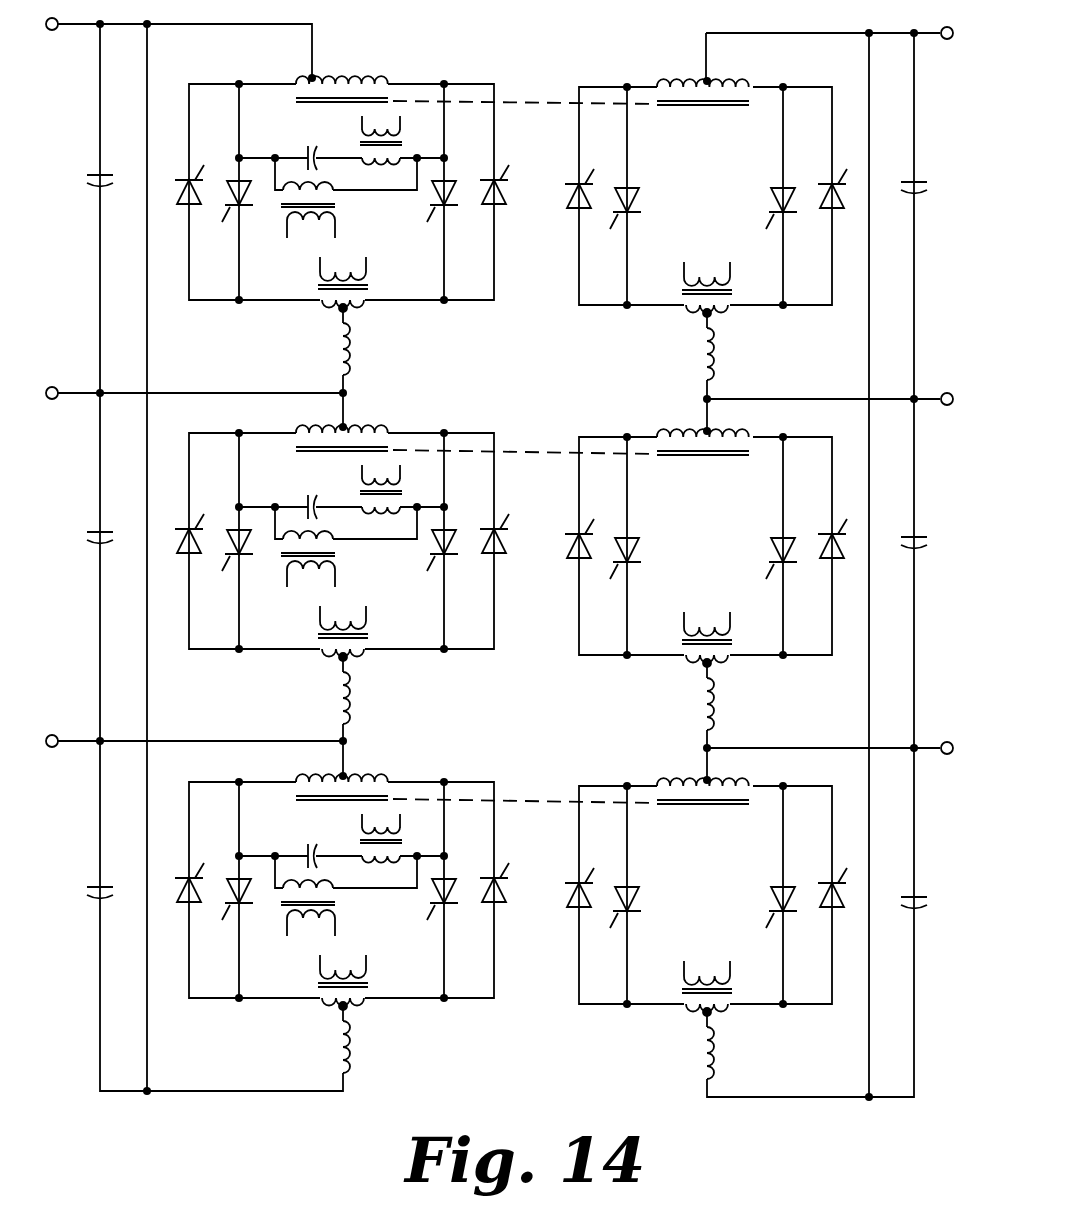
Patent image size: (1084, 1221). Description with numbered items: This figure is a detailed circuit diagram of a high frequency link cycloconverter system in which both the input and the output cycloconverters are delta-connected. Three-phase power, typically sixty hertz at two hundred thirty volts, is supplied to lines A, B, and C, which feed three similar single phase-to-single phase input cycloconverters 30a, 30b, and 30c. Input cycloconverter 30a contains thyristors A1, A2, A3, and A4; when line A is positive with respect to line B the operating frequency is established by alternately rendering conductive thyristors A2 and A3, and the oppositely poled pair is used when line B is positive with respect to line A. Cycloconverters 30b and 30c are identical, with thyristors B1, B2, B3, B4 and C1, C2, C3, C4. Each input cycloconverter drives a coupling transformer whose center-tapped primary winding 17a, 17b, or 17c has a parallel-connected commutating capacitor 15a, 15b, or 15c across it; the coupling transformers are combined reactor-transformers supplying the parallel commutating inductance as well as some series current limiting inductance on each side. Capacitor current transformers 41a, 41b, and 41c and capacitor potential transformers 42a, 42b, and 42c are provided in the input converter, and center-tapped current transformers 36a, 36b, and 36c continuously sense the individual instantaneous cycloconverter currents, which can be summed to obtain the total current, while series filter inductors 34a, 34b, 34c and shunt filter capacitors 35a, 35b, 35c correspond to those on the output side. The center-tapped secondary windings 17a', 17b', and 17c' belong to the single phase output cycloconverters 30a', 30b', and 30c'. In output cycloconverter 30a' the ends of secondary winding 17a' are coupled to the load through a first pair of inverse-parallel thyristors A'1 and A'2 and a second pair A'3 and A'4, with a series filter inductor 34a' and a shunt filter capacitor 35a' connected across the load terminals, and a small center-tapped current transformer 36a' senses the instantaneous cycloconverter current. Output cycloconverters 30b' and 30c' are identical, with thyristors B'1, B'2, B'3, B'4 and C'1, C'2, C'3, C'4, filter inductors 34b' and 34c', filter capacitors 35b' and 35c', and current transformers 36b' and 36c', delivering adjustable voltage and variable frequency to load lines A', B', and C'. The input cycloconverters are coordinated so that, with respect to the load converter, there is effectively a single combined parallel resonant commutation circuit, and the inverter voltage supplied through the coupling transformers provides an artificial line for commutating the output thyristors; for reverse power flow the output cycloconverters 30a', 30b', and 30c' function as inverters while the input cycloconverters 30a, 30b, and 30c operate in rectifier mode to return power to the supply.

The input line A is at (179, 40).
The input line B is at (194, 385).
The input line C is at (194, 733).
The load line A' is at (829, 22).
The load line B' is at (830, 389).
The load line C' is at (830, 739).
The input cycloconverter 30a is at (341, 172).
The input cycloconverter 30b is at (341, 527).
The input cycloconverter 30c is at (341, 876).
The output cycloconverter 30a' is at (705, 174).
The output cycloconverter 30b' is at (705, 530).
The output cycloconverter 30c' is at (705, 878).
The coupling transformer primary winding 17a is at (342, 71).
The coupling transformer primary winding 17b is at (345, 422).
The coupling transformer primary winding 17c is at (344, 770).
The coupling transformer secondary winding 17a' is at (716, 69).
The coupling transformer secondary winding 17b' is at (712, 427).
The coupling transformer secondary winding 17c' is at (711, 776).
The commutating capacitor 15a is at (304, 152).
The commutating capacitor 15b is at (304, 501).
The commutating capacitor 15c is at (304, 850).
The capacitor current transformer 41a is at (359, 150).
The capacitor current transformer 41b is at (359, 499).
The capacitor current transformer 41c is at (359, 848).
The capacitor potential transformer 42a is at (339, 208).
The capacitor potential transformer 42b is at (339, 557).
The capacitor potential transformer 42c is at (339, 906).
The current transformer 36a is at (362, 284).
The current transformer 36b is at (362, 633).
The current transformer 36c is at (362, 982).
The current transformer 36a' is at (728, 289).
The current transformer 36b' is at (728, 639).
The current transformer 36c' is at (728, 988).
The series filter inductor 34a is at (367, 350).
The series filter inductor 34b is at (367, 699).
The series filter inductor 34c is at (367, 1039).
The series filter inductor 34a' is at (733, 356).
The series filter inductor 34b' is at (733, 705).
The series filter inductor 34c' is at (732, 1045).
The shunt filter capacitor 35a is at (85, 171).
The shunt filter capacitor 35b is at (85, 527).
The shunt filter capacitor 35c is at (85, 883).
The shunt filter capacitor 35a' is at (928, 174).
The shunt filter capacitor 35b' is at (928, 533).
The shunt filter capacitor 35c' is at (927, 893).
The thyristor A1 is at (184, 180).
The thyristor A2 is at (244, 205).
The thyristor A3 is at (449, 206).
The thyristor A4 is at (504, 186).
The thyristor B1 is at (184, 529).
The thyristor B2 is at (244, 554).
The thyristor B3 is at (449, 555).
The thyristor B4 is at (504, 535).
The thyristor C1 is at (184, 878).
The thyristor C2 is at (244, 903).
The thyristor C3 is at (449, 904).
The thyristor C4 is at (504, 884).
The thyristor A'1 is at (572, 182).
The thyristor A'2 is at (634, 210).
The thyristor A'3 is at (770, 192).
The thyristor A'4 is at (823, 182).
The thyristor B'1 is at (572, 532).
The thyristor B'2 is at (634, 560).
The thyristor B'3 is at (770, 542).
The thyristor B'4 is at (823, 532).
The thyristor C'1 is at (572, 881).
The thyristor C'2 is at (634, 909).
The thyristor C'3 is at (770, 891).
The thyristor C'4 is at (823, 881).